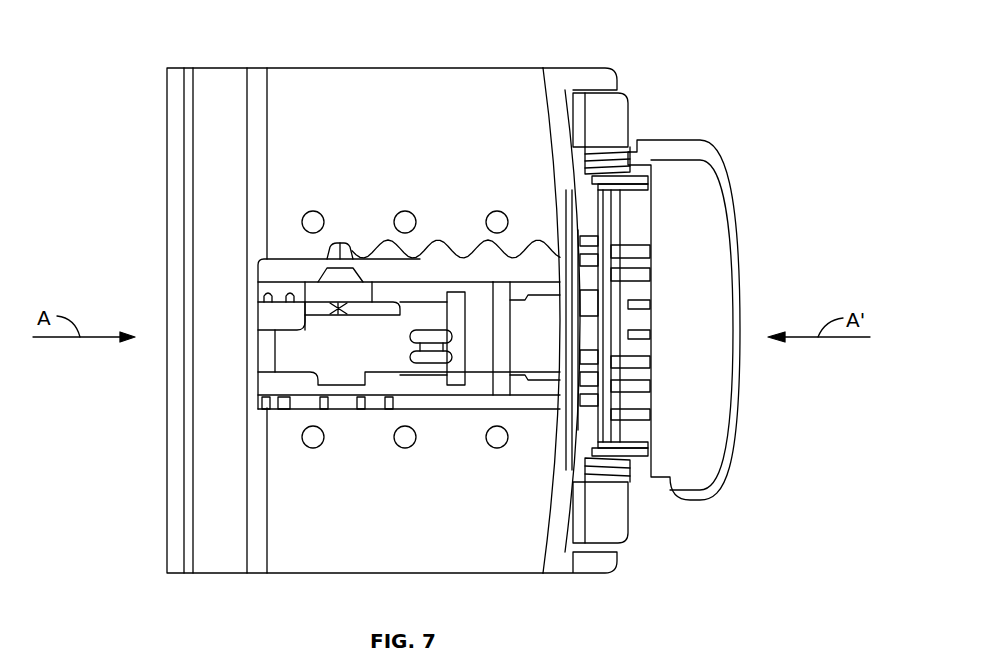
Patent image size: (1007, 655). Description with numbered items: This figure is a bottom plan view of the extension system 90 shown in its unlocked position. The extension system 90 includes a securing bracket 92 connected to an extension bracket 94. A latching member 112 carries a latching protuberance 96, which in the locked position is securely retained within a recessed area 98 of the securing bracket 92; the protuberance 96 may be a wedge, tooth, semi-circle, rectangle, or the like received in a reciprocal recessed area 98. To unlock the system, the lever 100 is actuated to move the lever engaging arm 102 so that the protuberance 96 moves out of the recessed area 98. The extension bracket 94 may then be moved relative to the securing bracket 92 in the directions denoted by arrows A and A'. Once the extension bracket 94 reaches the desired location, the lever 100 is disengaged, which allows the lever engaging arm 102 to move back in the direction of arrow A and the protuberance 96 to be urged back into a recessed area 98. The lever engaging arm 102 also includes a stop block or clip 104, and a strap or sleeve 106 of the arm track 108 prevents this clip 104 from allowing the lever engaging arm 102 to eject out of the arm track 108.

The extension system 90 is at (141, 45).
The securing bracket 92 is at (347, 95).
The extension bracket 94 is at (645, 105).
The latching protuberance 96 is at (337, 245).
The recessed area 98 is at (330, 247).
The lever 100 is at (718, 296).
The lever engaging arm 102 is at (541, 325).
The stop block or clip 104 is at (441, 330).
The strap or sleeve 106 is at (490, 378).
The arm track 108 is at (393, 398).
The latching member 112 is at (262, 270).